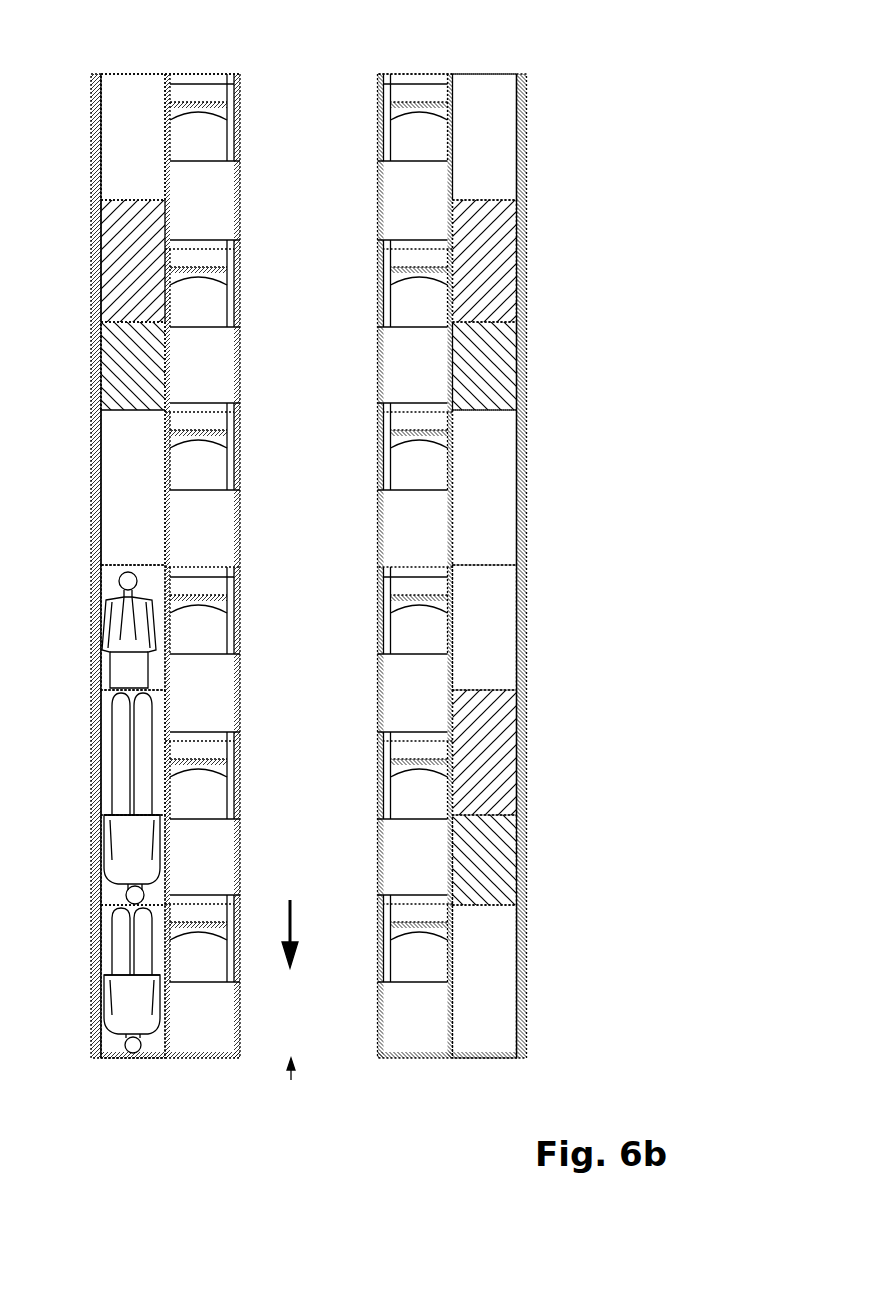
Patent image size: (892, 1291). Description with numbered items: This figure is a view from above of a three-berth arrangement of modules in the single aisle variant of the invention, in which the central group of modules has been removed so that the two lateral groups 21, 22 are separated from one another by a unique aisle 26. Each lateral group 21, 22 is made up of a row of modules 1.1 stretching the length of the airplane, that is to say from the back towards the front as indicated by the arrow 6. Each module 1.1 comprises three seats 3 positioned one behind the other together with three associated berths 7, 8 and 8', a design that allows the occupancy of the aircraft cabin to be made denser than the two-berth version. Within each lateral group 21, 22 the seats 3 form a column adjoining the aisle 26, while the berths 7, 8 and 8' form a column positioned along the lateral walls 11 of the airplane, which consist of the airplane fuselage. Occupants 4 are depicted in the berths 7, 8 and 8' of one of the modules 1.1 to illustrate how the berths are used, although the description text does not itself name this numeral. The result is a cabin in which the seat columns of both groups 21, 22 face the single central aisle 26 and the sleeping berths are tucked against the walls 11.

The module 1.1 is at (80, 80).
The seat 3 is at (197, 123).
The passenger 4 is at (118, 580).
The arrow 6 is at (292, 913).
The berth 7 is at (108, 885).
The berth 8 is at (309, 763).
The berth 8' is at (280, 382).
The lateral wall 11 is at (100, 1058).
The lateral group 21 is at (97, 58).
The lateral group 22 is at (380, 58).
The aisle 26 is at (291, 1080).